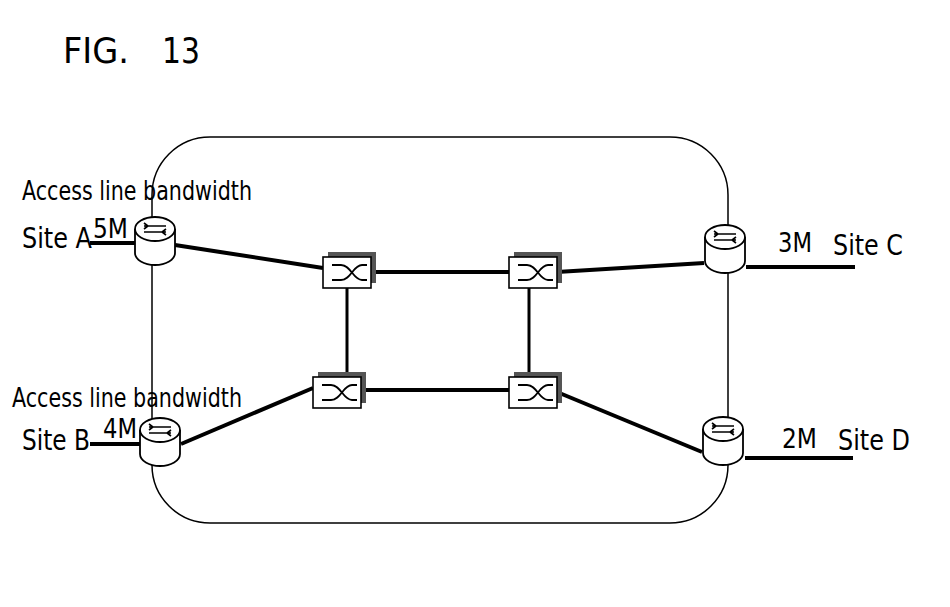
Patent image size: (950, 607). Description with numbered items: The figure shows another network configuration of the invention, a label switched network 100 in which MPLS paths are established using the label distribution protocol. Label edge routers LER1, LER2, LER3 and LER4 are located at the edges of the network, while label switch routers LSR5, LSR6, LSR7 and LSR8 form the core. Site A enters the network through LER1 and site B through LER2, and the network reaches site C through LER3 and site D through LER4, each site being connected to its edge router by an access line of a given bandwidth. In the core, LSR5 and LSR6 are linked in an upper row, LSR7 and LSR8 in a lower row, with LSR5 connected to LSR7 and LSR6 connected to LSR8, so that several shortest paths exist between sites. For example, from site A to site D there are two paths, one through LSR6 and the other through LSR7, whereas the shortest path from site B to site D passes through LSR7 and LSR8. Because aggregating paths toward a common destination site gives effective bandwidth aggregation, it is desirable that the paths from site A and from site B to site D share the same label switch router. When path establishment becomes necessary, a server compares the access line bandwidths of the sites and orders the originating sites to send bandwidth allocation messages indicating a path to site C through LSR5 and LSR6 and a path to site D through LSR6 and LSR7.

The label switched network 100 is at (606, 526).
The label edge router LER1 is at (186, 237).
The label edge router LER2 is at (188, 456).
The label edge router LER3 is at (699, 227).
The label edge router LER4 is at (690, 455).
The label switch router LSR5 is at (344, 245).
The label switch router LSR6 is at (531, 245).
The label switch router LSR7 is at (341, 409).
The label switch router LSR8 is at (531, 409).